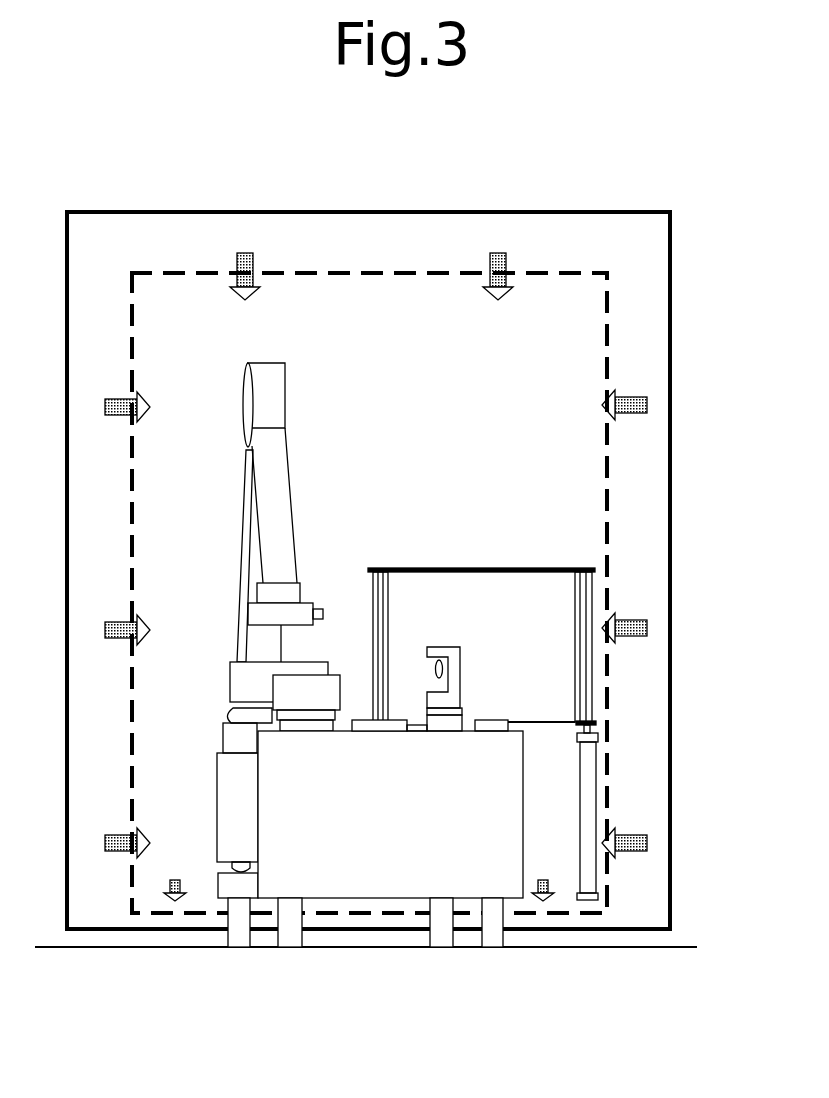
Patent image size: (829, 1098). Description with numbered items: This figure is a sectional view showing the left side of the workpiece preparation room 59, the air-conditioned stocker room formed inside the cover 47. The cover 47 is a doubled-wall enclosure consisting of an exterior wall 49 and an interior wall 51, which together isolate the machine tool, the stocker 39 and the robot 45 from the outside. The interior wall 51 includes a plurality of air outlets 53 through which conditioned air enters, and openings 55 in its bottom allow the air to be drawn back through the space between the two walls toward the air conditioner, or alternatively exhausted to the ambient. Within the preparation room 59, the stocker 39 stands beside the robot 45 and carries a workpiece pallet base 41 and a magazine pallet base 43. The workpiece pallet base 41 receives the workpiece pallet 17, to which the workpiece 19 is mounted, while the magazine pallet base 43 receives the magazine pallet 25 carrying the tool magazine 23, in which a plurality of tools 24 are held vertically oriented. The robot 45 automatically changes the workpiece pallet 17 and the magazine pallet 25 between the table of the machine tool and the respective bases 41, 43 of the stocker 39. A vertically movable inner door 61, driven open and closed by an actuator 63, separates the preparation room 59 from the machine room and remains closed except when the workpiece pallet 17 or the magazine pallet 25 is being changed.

The workpiece pallet 17 is at (272, 715).
The workpiece 19 is at (287, 688).
The tool magazine 23 is at (455, 677).
The tool 24 is at (437, 646).
The magazine pallet 25 is at (462, 713).
The stocker 39 is at (372, 852).
The workpiece pallet base 41 is at (385, 731).
The magazine pallet base 43 is at (497, 731).
The robot 45 is at (237, 508).
The cover 47 is at (369, 210).
The exterior wall 49 is at (209, 212).
The interior wall 51 is at (452, 272).
The air outlet 53 is at (188, 278).
The opening 55 is at (177, 917).
The workpiece preparation room 59 is at (434, 378).
The inner door 61 is at (515, 568).
The actuator 63 is at (587, 810).